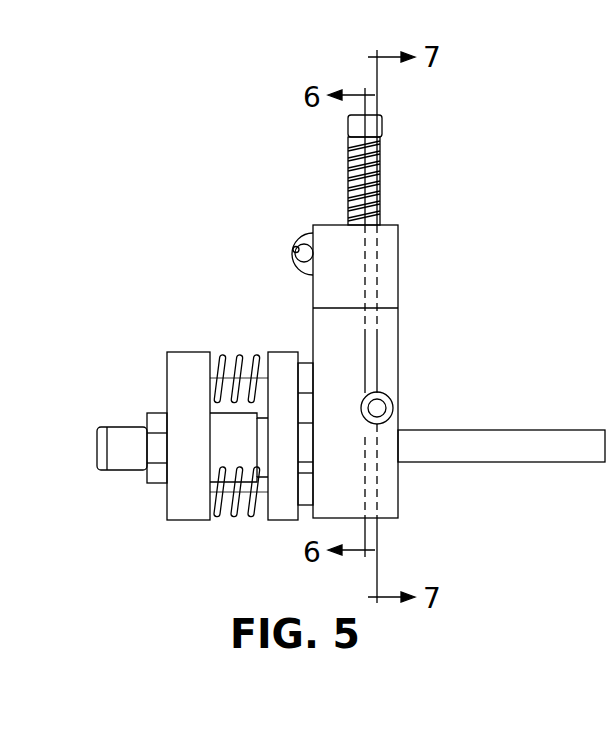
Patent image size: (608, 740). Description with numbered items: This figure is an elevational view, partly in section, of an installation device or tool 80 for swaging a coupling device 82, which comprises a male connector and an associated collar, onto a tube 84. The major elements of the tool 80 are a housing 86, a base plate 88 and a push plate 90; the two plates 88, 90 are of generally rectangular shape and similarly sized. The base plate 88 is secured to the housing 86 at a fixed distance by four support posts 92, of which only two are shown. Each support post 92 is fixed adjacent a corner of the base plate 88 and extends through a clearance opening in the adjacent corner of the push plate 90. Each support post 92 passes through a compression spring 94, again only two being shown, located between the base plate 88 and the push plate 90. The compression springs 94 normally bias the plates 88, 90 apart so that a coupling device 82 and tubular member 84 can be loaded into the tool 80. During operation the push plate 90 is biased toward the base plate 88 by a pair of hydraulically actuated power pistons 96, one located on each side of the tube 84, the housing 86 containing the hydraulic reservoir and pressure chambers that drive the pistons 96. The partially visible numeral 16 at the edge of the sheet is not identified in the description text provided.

The installation device or tool 80 is at (442, 222).
The coupling device 82 is at (123, 470).
The tube 84 is at (470, 450).
The housing 86 is at (388, 328).
The base plate 88 is at (178, 521).
The push plate 90 is at (283, 521).
The support post 92 is at (250, 353).
The compression spring 94 is at (222, 353).
The hydraulically actuated power piston 96 is at (307, 446).
The frame member 16 is at (601, 368).